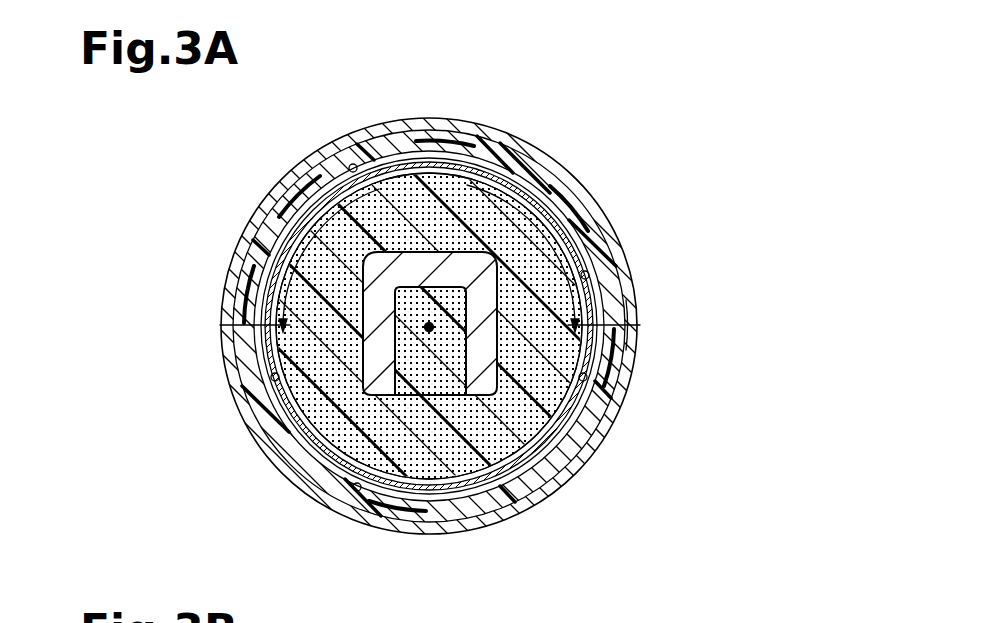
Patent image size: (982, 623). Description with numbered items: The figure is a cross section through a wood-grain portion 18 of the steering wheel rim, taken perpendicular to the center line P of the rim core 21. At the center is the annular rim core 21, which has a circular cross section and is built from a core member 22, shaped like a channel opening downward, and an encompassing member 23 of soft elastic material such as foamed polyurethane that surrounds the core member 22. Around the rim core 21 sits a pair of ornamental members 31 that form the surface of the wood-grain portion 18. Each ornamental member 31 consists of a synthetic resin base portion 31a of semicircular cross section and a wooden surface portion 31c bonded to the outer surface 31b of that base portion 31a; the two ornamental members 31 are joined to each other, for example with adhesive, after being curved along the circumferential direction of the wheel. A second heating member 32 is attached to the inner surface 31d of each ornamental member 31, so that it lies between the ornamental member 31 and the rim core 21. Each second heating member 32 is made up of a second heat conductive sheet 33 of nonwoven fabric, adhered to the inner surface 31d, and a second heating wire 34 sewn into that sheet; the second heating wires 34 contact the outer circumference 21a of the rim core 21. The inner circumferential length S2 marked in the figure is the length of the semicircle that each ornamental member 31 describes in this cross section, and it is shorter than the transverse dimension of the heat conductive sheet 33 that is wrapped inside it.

The wood-grain portion 18 is at (590, 528).
The rim core 21 is at (176, 360).
The outer circumference of the rim core 21a is at (630, 340).
The core member 22 is at (270, 382).
The encompassing member 23 is at (276, 386).
The ornamental member 31 is at (552, 66).
The base portion 31a is at (512, 160).
The outer surface of the base portion 31b is at (565, 172).
The surface portion 31c is at (462, 130).
The inner surface of the ornamental member 31d is at (353, 165).
The second heating member 32 is at (195, 190).
The second heat conductive sheet 33 is at (288, 214).
The second heating wire 34 is at (288, 243).
The inner circumferential length S2 is at (592, 221).
The center line P is at (429, 331).